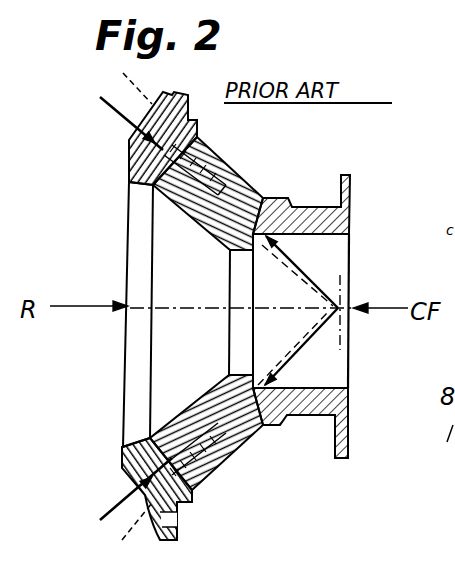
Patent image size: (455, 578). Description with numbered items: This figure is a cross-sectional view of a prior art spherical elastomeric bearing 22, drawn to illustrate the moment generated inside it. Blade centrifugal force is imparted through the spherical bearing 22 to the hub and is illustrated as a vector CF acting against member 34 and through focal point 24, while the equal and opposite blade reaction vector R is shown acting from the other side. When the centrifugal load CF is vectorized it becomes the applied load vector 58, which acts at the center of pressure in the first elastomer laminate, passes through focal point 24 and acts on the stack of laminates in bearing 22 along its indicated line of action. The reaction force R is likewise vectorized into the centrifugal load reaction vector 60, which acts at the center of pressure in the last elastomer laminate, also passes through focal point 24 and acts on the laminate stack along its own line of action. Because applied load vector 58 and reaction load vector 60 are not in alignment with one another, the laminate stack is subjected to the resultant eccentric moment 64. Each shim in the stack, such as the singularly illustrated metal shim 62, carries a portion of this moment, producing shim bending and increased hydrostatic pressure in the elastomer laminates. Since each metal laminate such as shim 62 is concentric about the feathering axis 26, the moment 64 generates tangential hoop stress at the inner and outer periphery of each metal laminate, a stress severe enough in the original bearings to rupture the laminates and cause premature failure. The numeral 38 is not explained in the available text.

The spherical bearing 22 is at (270, 151).
The focal point 24 is at (342, 307).
The feathering axis 26 is at (183, 303).
The member 34 is at (315, 212).
The mounting flange lug 38 is at (178, 93).
The applied load vector 58 is at (302, 270).
The centrifugal load reaction vector 60 is at (113, 108).
The metal shim 62 is at (222, 170).
The resultant eccentric moment 64 is at (236, 180).